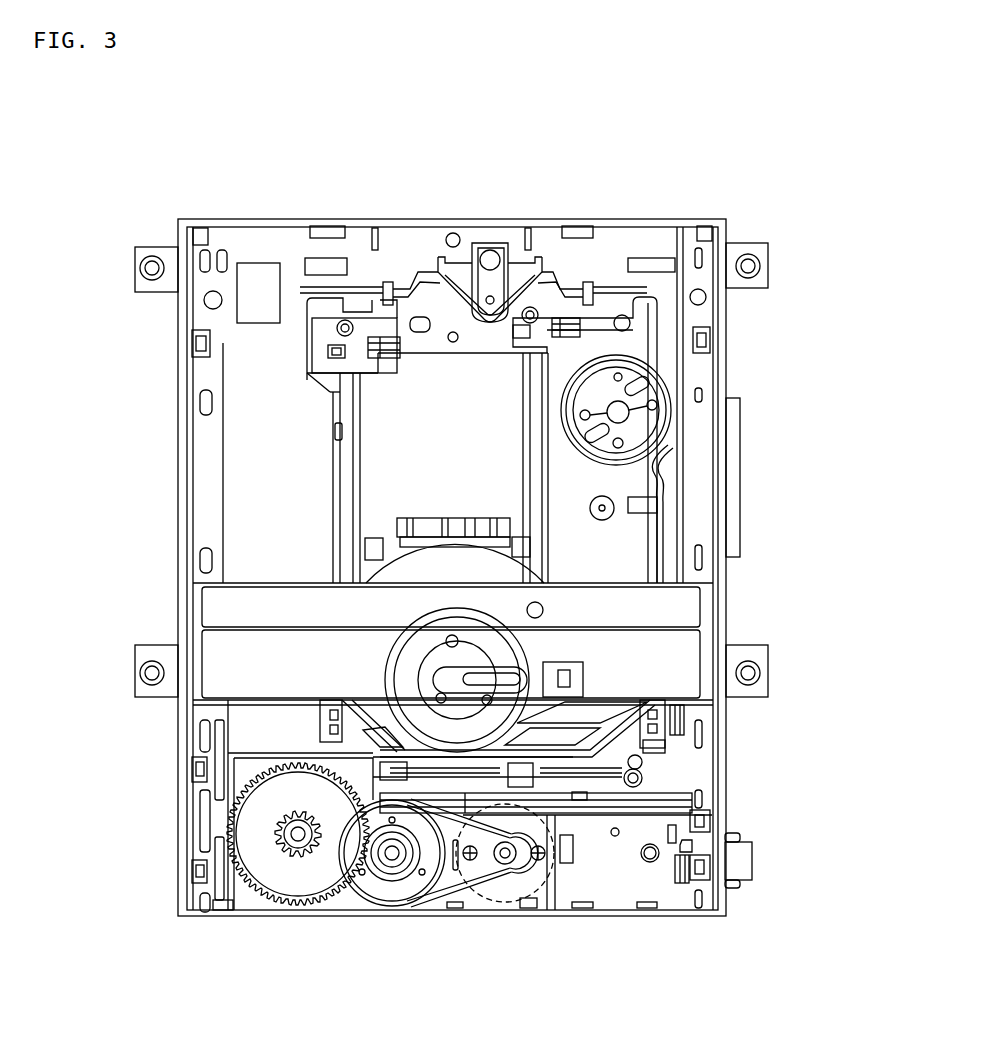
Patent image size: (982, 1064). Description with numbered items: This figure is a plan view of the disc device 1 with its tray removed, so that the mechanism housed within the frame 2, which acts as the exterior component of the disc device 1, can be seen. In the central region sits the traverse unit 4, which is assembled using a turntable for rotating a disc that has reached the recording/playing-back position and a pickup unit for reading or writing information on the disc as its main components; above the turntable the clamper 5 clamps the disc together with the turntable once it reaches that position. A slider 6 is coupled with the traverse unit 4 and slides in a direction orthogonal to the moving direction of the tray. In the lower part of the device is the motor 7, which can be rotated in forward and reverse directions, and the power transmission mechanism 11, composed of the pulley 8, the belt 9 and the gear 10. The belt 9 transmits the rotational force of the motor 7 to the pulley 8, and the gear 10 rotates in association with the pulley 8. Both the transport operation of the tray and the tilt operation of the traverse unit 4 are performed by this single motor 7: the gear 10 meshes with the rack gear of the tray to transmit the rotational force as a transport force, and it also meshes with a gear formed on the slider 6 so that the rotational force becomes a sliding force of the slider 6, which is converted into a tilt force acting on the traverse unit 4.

The disc device 1 is at (593, 200).
The frame 2 is at (732, 335).
The traverse unit 4 is at (399, 300).
The clamper 5 is at (492, 655).
The slider 6 is at (352, 722).
The motor 7 is at (555, 905).
The pulley 8 is at (365, 893).
The belt 9 is at (575, 797).
The gear 10 is at (248, 884).
The power transmission mechanism 11 is at (218, 916).